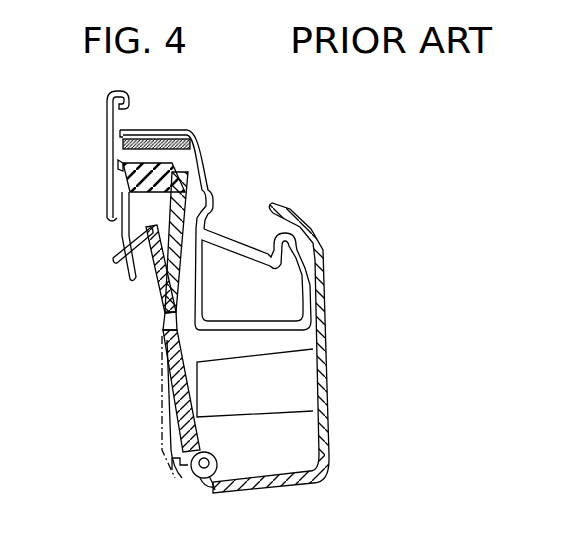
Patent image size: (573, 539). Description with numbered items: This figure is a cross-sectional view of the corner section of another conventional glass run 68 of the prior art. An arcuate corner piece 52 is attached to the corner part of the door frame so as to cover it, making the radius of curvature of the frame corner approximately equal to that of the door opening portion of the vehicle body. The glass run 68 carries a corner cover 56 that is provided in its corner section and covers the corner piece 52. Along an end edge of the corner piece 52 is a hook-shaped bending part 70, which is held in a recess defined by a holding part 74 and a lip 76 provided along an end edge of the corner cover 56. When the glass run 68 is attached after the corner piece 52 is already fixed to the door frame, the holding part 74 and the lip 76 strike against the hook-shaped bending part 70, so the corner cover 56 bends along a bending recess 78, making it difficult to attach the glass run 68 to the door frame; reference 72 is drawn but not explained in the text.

The corner piece 52 is at (328, 362).
The corner cover 56 is at (168, 377).
The glass run 68 is at (121, 268).
The hook-shaped bending part 70 is at (213, 487).
The hinge portion 72 is at (185, 452).
The holding part 74 is at (217, 458).
The lip 76 is at (210, 485).
The bending recess 78 is at (160, 332).